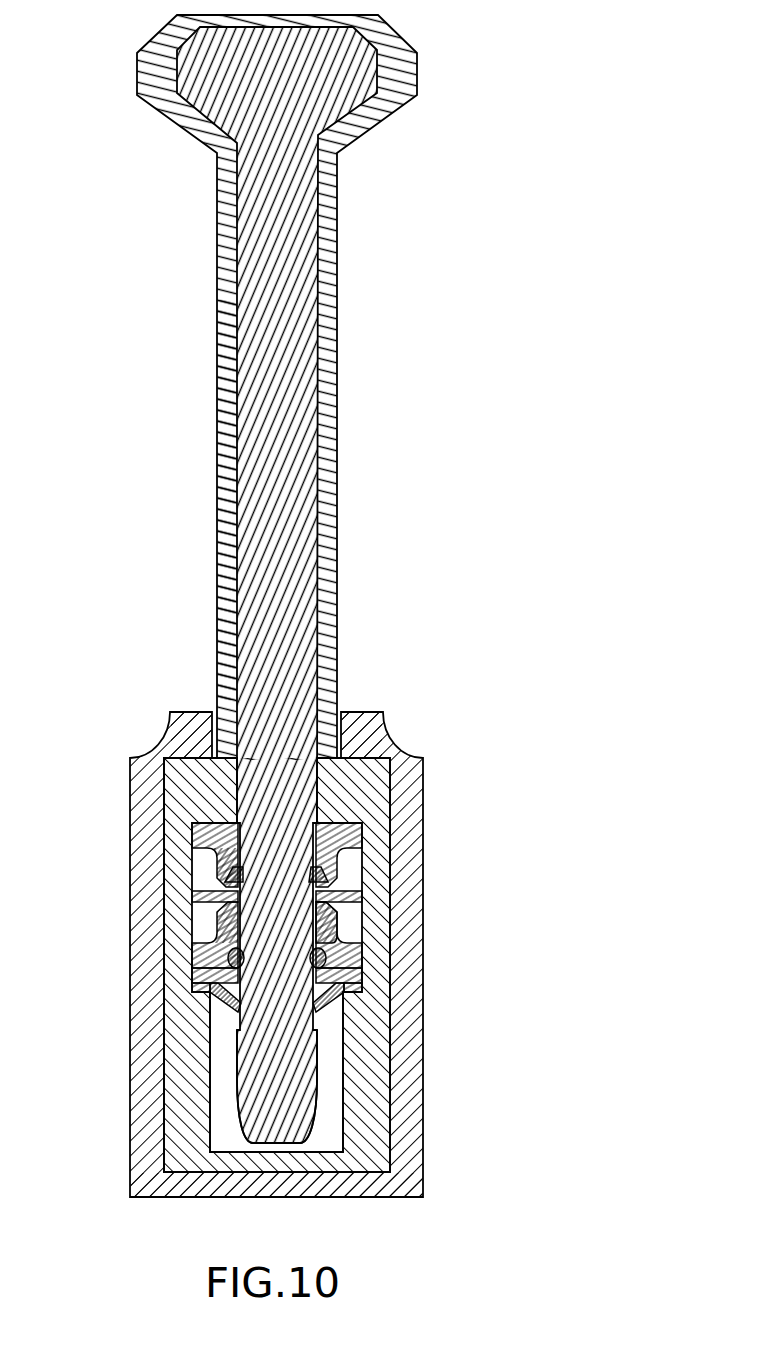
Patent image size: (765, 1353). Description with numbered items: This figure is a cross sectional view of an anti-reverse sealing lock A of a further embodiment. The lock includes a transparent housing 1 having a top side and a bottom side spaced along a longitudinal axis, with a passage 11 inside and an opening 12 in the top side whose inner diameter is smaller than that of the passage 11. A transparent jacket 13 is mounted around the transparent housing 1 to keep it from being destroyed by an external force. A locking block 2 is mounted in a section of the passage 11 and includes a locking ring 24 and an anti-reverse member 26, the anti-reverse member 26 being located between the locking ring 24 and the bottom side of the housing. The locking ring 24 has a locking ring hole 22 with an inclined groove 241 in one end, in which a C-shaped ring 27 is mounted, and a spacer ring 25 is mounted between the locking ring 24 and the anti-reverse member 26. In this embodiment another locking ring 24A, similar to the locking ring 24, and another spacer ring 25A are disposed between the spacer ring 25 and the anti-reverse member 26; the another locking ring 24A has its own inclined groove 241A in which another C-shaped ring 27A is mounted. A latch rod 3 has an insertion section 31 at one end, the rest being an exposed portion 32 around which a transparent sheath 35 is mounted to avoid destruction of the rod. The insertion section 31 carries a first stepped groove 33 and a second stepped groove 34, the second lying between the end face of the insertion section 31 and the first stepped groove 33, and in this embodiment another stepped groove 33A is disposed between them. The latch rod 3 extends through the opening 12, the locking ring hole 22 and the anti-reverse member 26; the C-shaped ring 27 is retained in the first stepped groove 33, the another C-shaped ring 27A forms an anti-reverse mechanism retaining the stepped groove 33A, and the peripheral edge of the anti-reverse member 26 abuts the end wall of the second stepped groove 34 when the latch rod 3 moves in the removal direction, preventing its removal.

The anti-reverse sealing lock A is at (532, 222).
The transparent housing 1 is at (318, 924).
The passage 11 is at (337, 1133).
The opening 12 is at (235, 750).
The transparent jacket 13 is at (423, 1142).
The locking block 2 is at (266, 965).
The locking ring hole 22 is at (322, 838).
The locking ring 24 is at (145, 831).
The inclined groove 241 is at (222, 848).
The another locking ring 24A is at (129, 963).
The inclined groove 241A is at (230, 940).
The spacer ring 25 is at (345, 912).
The another spacer ring 25A is at (355, 985).
The anti-reverse member 26 is at (235, 1003).
The C-shaped ring 27 is at (188, 868).
The another C-shaped ring 27A is at (345, 955).
The latch rod 3 is at (269, 579).
The insertion section 31 is at (269, 585).
The exposed portion 32 is at (237, 260).
The first stepped groove 33 is at (325, 872).
The another stepped groove 33A is at (236, 968).
The second stepped groove 34 is at (322, 1008).
The transparent sheath 35 is at (230, 557).